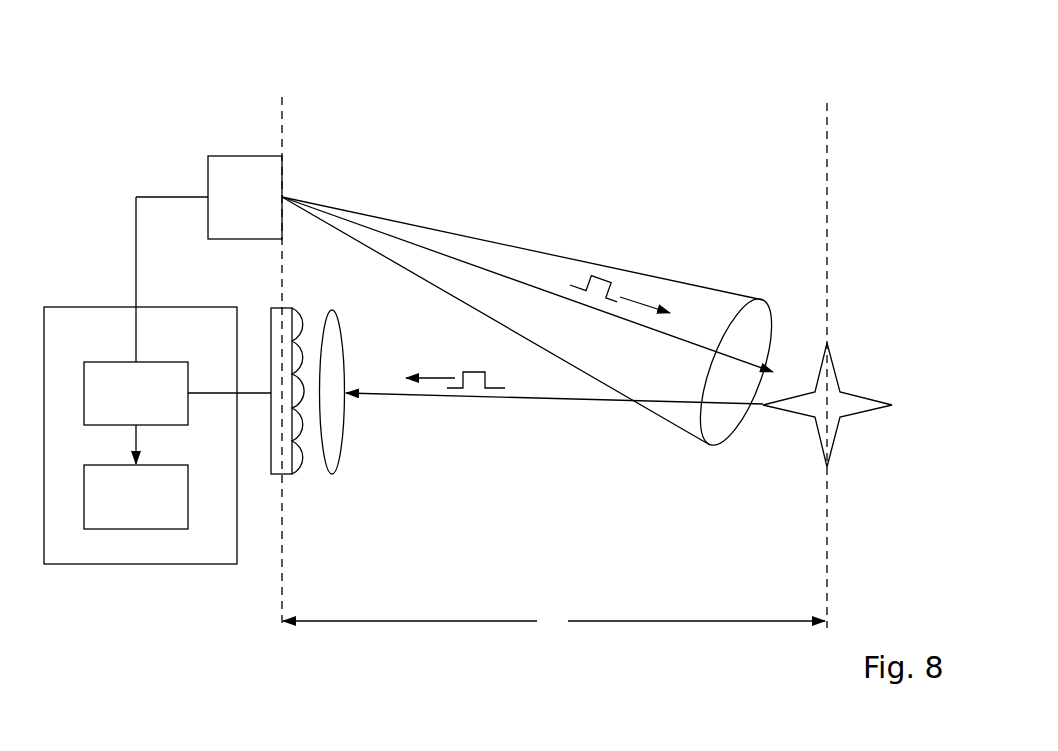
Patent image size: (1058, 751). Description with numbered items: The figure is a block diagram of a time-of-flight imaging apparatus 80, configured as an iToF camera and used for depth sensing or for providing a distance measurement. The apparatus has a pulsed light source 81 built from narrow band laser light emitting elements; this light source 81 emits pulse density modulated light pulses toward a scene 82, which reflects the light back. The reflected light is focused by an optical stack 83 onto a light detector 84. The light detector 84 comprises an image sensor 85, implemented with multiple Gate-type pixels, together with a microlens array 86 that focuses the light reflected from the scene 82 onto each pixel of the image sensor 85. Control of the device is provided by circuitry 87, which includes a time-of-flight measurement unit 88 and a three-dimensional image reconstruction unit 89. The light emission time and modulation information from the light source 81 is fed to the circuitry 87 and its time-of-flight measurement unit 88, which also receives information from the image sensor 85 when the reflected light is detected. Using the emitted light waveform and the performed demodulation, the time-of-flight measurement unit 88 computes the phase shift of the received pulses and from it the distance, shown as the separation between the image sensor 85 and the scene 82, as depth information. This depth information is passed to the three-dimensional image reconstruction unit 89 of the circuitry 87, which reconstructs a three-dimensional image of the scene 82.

The time-of-flight imaging apparatus 80 is at (405, 65).
The pulsed light source 81 is at (245, 197).
The scene 82 is at (869, 428).
The optical stack 83 is at (348, 430).
The light detector 84 is at (321, 418).
The image sensor 85 is at (272, 475).
The microlens array 86 is at (298, 318).
The circuitry 87 is at (157, 380).
The time-of-flight measurement unit 88 is at (136, 393).
The 3D image reconstruction unit 89 is at (136, 497).